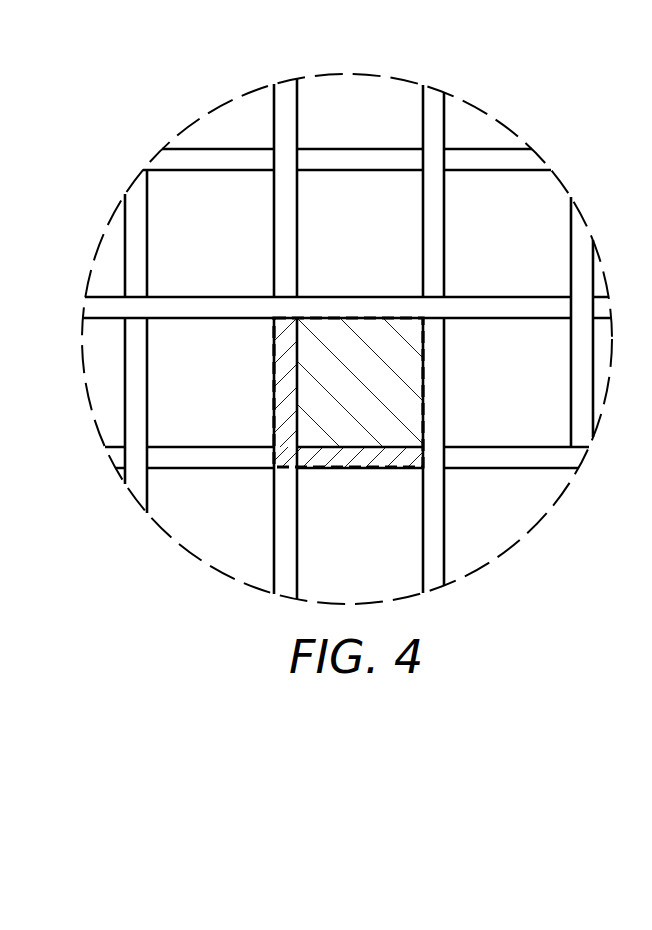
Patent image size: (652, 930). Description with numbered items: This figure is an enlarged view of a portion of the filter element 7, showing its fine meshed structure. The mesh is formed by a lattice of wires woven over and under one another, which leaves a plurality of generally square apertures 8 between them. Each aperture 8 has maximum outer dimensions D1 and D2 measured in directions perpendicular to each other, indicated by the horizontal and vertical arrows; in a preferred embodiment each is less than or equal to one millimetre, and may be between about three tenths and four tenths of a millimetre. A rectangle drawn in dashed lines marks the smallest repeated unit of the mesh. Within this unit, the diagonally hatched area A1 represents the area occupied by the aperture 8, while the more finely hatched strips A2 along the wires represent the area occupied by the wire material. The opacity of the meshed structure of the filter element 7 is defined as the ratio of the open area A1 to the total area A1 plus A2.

The filter element 7 is at (444, 114).
The apertures 8 is at (532, 200).
The area occupied by the aperture A1 is at (410, 378).
The area occupied by the wires A2 is at (353, 463).
The maximum outer dimension of aperture D1 is at (423, 192).
The maximum outer dimension of aperture D2 is at (317, 172).